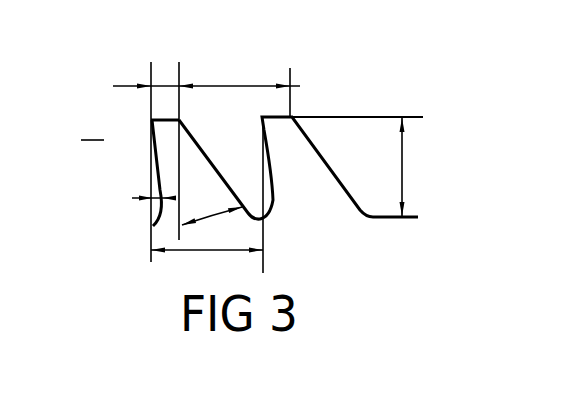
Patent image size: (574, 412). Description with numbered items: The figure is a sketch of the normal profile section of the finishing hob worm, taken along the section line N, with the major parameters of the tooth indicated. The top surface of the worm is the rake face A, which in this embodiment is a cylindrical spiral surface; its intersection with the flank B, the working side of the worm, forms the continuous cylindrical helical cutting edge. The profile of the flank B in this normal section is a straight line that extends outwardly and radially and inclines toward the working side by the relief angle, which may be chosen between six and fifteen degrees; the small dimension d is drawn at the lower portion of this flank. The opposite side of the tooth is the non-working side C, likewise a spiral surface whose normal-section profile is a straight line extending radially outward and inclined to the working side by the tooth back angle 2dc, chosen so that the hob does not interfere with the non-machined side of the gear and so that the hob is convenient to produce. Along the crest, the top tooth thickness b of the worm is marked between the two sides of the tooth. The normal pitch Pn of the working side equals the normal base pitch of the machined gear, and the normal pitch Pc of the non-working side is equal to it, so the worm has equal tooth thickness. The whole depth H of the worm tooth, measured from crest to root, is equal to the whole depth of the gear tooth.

The rake face A is at (159, 120).
The flank B is at (157, 172).
The non-working side C is at (208, 160).
The top tooth thickness b is at (153, 75).
The normal pitch of the working side Pc is at (239, 73).
The normal pitch Pn is at (207, 239).
The whole depth H is at (417, 167).
The flank relief depth d is at (143, 202).
The tooth back angle 2dc is at (212, 211).
The section line N- N is at (91, 140).